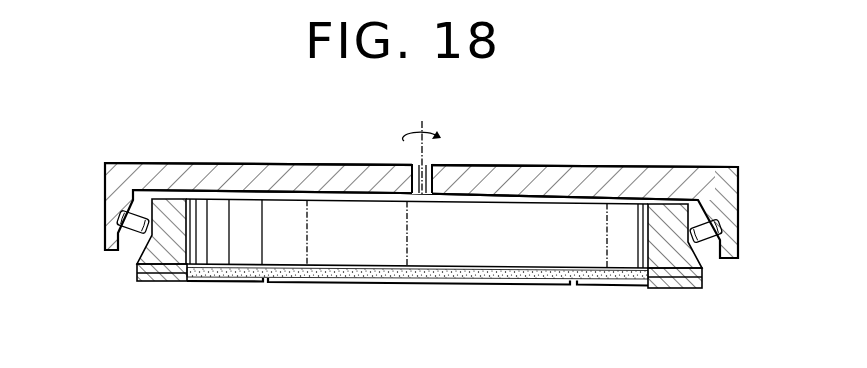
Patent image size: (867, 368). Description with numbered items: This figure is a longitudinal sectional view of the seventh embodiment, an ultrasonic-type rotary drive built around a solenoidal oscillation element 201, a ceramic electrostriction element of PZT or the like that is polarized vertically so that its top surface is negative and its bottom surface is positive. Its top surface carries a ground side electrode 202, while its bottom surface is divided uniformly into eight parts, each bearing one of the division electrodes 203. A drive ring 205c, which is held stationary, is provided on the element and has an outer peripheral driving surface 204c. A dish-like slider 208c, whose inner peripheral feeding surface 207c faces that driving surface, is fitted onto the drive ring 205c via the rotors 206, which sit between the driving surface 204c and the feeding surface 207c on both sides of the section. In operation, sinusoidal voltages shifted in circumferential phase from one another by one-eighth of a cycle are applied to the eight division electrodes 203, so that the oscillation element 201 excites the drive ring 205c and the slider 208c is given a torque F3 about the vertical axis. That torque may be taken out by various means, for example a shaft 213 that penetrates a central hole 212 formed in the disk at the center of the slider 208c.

The solenoidal oscillation element 201 is at (300, 288).
The ground side electrode 202 is at (392, 269).
The division electrodes 203 is at (650, 288).
The outer peripheral driving surface 204c is at (155, 282).
The drive ring 205c is at (190, 237).
The rotors 206 is at (128, 246).
The inner peripheral feeding surface 207c is at (128, 203).
The dish-like slider 208c is at (245, 163).
The central hole 212 is at (440, 172).
The shaft 213 is at (400, 142).
The torque F3 is at (431, 124).